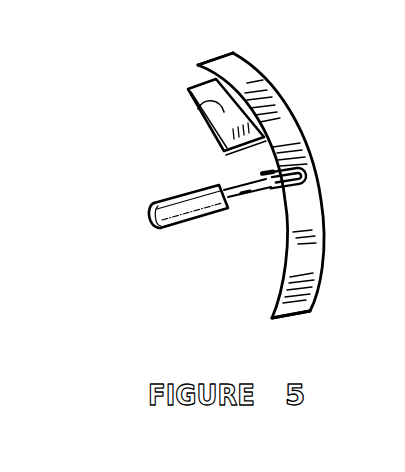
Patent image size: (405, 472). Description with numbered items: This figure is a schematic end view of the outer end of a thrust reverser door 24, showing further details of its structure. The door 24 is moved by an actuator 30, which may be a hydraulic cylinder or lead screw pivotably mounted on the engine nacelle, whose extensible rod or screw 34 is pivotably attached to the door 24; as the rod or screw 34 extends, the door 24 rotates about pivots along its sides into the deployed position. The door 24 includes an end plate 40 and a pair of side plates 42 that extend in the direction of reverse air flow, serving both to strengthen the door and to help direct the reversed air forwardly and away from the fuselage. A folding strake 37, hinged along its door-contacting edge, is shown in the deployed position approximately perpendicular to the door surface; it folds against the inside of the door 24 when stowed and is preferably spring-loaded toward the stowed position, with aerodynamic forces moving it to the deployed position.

The door 24 is at (302, 116).
The actuator 30 is at (179, 214).
The extensible rod or screw 34 is at (257, 198).
The folding strake 37 is at (198, 109).
The end plate 40 is at (311, 248).
The side plate 42 is at (203, 70).